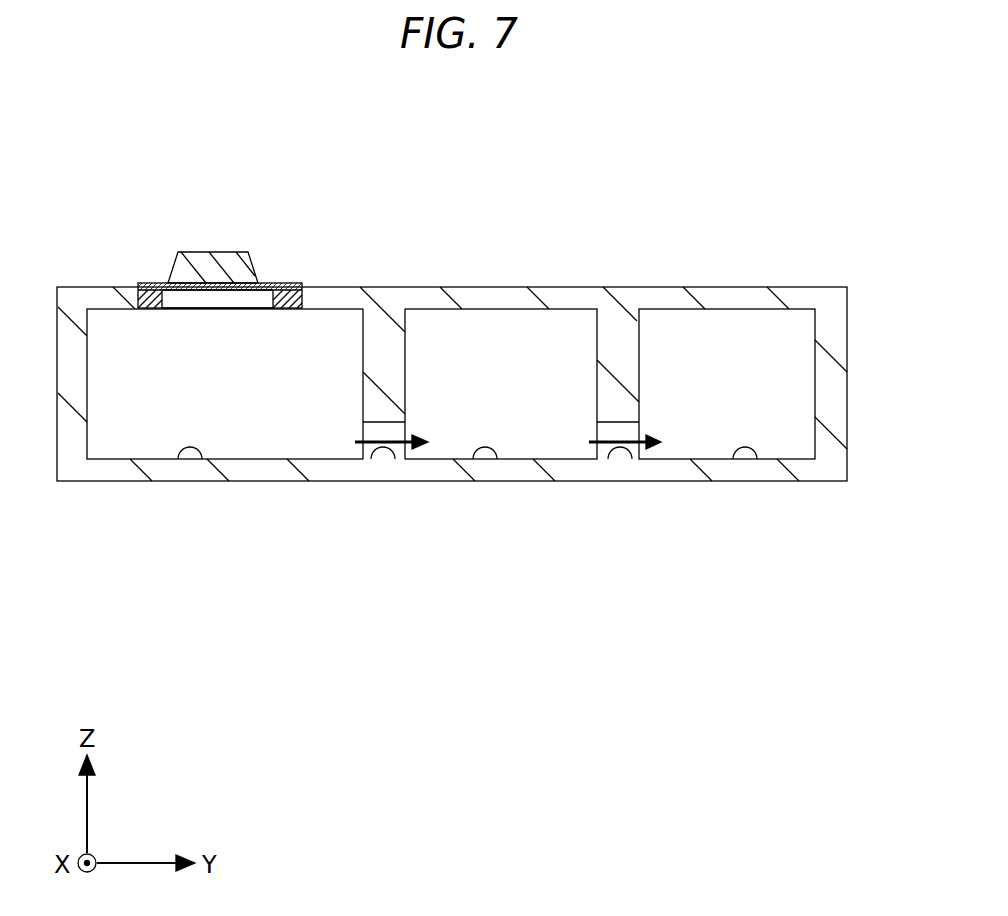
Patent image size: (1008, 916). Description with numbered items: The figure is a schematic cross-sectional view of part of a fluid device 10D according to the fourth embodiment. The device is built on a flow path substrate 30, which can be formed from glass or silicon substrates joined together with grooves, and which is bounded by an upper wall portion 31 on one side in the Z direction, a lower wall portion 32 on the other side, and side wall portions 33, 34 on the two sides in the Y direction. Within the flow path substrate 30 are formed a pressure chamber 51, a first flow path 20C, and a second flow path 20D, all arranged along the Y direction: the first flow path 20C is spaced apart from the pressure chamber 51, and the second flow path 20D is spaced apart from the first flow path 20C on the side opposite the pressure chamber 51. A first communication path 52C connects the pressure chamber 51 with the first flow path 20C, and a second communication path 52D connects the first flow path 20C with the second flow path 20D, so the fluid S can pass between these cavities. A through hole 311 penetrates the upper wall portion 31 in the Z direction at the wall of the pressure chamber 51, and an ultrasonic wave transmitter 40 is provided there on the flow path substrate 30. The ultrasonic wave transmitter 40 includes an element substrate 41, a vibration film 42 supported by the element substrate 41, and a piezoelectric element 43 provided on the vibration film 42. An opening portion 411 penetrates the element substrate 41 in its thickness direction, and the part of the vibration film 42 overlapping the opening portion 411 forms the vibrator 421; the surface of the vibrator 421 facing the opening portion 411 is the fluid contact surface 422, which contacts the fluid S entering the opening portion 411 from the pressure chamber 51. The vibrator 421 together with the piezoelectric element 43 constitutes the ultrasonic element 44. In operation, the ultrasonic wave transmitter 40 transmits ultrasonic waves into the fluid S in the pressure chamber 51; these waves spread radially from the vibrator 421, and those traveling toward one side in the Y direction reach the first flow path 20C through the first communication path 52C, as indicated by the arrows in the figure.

The fluid device 10D is at (80, 153).
The flow path substrate 30 is at (473, 293).
The upper wall portion 31 is at (525, 298).
The lower wall portion 32 is at (283, 473).
The side wall portion 33 is at (58, 440).
The side wall portion 34 is at (847, 390).
The through hole 311 is at (150, 283).
The ultrasonic wave transmitter 40 is at (154, 186).
The element substrate 41 is at (287, 283).
The vibration film 42 is at (157, 283).
The piezoelectric element 43 is at (220, 262).
The ultrasonic element 44 is at (300, 176).
The opening portion 411 is at (170, 300).
The vibrator 421 is at (267, 283).
The fluid contact surface 422 is at (218, 292).
The pressure chamber 51 is at (195, 463).
The first communication path 52C is at (392, 463).
The second communication path 52D is at (628, 463).
The first flow path 20C is at (495, 463).
The second flow path 20D is at (756, 463).
The fluid S is at (326, 332).